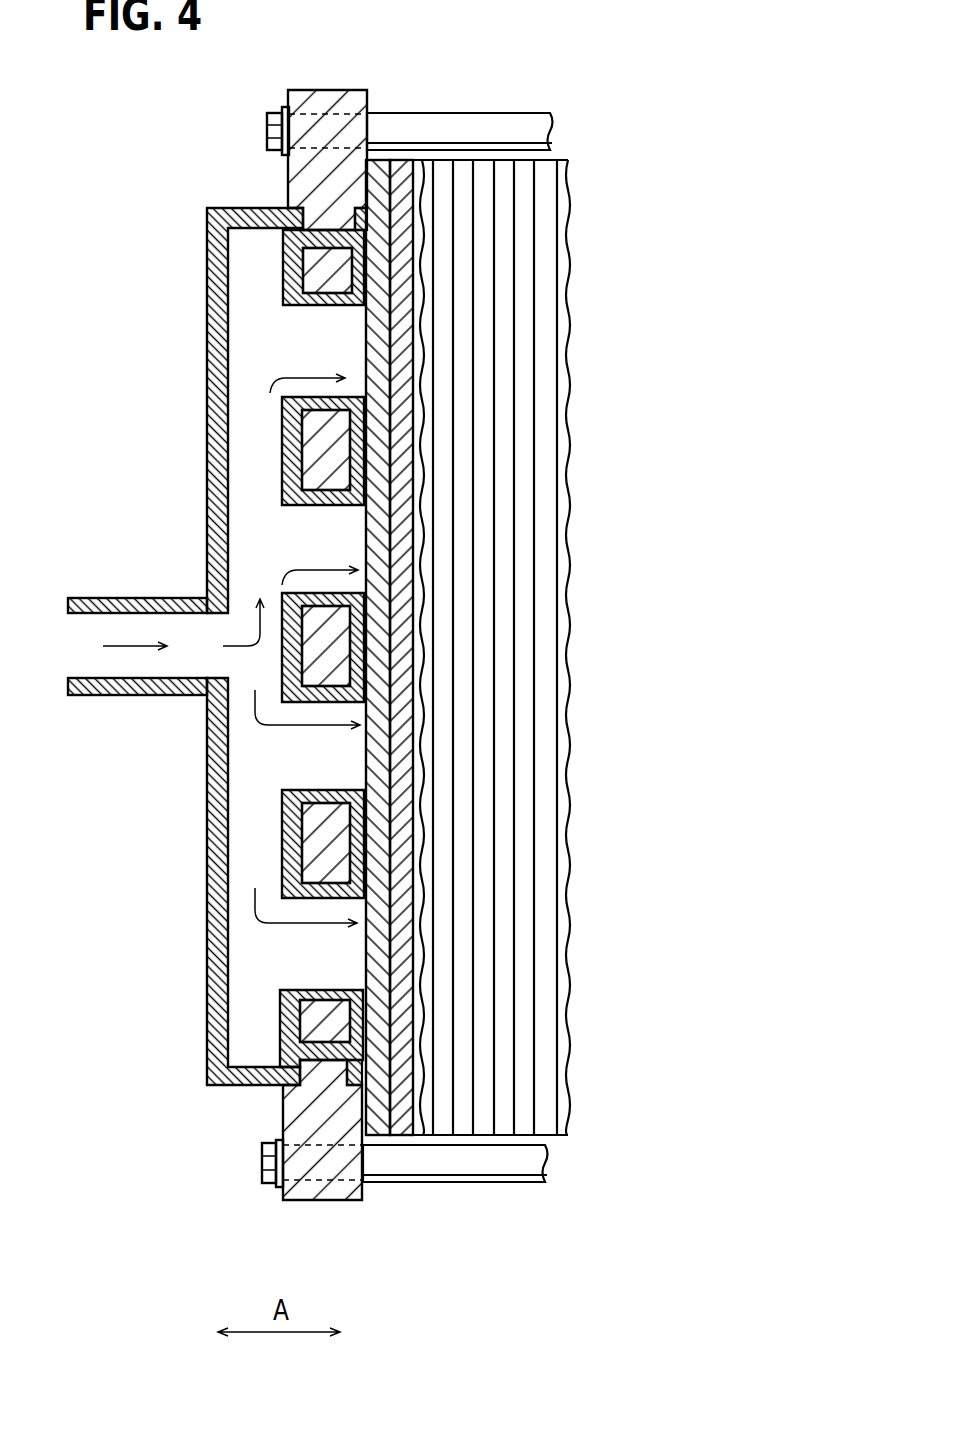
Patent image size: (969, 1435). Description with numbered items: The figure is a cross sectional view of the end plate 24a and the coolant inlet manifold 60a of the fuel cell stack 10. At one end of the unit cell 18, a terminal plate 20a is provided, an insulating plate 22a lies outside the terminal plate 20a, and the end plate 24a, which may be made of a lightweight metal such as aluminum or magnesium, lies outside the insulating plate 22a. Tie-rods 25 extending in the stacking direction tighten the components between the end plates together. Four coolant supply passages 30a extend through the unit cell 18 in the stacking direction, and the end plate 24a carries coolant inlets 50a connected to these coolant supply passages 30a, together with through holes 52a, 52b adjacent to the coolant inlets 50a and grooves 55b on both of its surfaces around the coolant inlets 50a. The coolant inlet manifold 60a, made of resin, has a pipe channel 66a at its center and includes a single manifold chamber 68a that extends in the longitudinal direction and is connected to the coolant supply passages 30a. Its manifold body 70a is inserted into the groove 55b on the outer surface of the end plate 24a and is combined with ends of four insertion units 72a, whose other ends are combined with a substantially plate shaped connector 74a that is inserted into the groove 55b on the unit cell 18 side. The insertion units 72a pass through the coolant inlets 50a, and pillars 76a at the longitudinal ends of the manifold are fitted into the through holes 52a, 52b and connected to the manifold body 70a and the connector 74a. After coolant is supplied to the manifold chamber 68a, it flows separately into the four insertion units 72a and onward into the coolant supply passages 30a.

The fuel cell stack 10 is at (152, 126).
The unit cell 18 is at (492, 143).
The terminal plate 20a is at (397, 1120).
The insulating plate 22a is at (358, 1098).
The end plate 24a is at (288, 80).
The tie-rod 25 is at (438, 130).
The coolant supply passage 30a is at (382, 332).
The coolant inlet 50a is at (330, 305).
The through hole 52a is at (307, 242).
The through hole 52b is at (282, 1050).
The groove 55b is at (290, 207).
The coolant inlet manifold 60a is at (197, 247).
The pipe channel 66a is at (130, 598).
The manifold chamber 68a is at (265, 315).
The manifold body 70a is at (213, 832).
The insertion unit 72a is at (358, 397).
The connector 74a is at (367, 273).
The pillar 76a is at (367, 242).